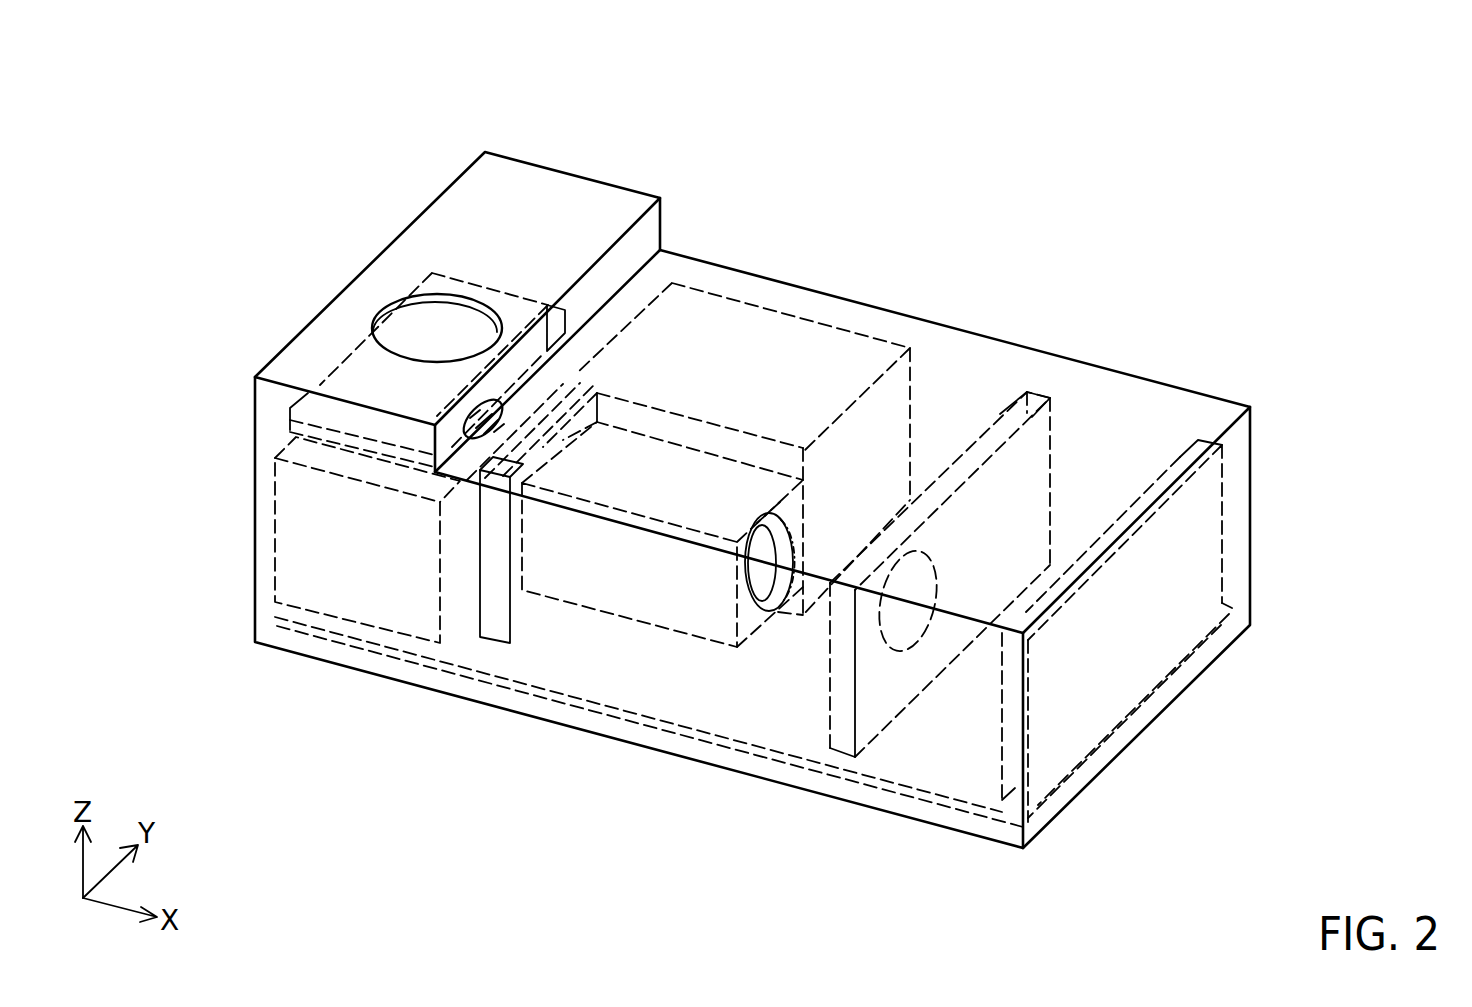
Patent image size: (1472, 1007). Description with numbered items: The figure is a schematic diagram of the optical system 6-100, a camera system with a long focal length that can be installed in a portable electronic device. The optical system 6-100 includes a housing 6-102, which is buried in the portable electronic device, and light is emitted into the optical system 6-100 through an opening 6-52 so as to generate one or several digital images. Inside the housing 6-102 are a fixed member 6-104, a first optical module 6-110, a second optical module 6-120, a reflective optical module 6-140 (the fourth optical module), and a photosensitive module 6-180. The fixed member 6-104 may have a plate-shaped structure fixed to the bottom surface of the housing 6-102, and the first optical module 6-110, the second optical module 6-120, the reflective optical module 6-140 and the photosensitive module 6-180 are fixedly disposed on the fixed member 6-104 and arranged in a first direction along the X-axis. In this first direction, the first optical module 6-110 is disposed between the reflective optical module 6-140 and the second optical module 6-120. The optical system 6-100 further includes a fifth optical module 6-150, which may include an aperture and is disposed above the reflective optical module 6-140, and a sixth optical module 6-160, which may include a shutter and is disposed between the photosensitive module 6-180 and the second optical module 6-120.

The optical system 6-100 is at (337, 90).
The housing 6-102 is at (562, 208).
The opening 6-52 is at (432, 300).
The fifth optical module 6-150 is at (312, 427).
The reflective optical module 6-140 is at (358, 566).
The second optical module 6-120 is at (627, 570).
The first optical module 6-110 is at (755, 348).
The sixth optical module 6-160 is at (1025, 412).
The photosensitive module 6-180 is at (1197, 437).
The fixed member 6-104 is at (946, 746).